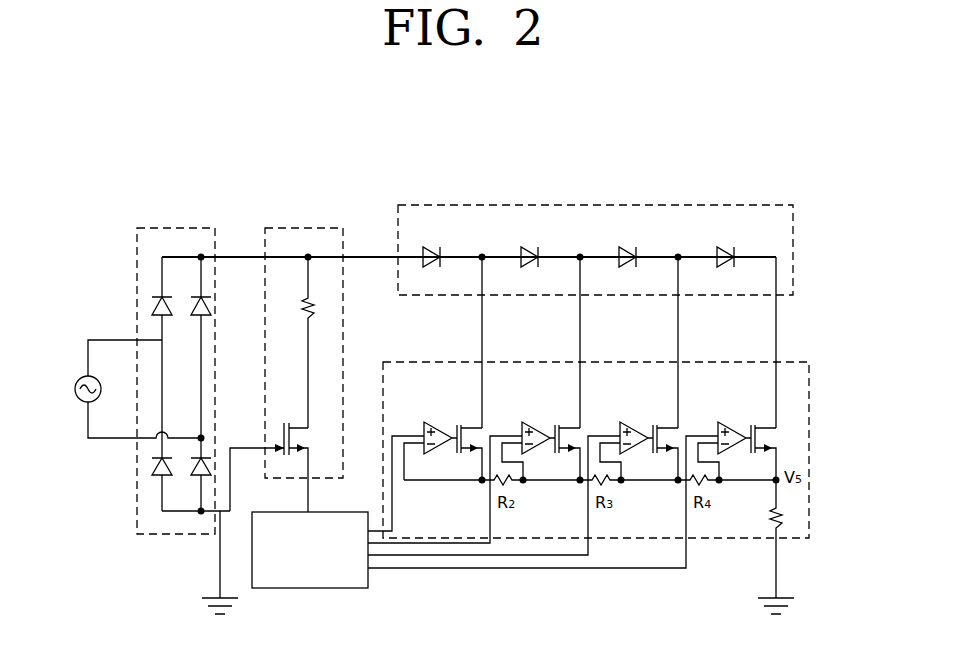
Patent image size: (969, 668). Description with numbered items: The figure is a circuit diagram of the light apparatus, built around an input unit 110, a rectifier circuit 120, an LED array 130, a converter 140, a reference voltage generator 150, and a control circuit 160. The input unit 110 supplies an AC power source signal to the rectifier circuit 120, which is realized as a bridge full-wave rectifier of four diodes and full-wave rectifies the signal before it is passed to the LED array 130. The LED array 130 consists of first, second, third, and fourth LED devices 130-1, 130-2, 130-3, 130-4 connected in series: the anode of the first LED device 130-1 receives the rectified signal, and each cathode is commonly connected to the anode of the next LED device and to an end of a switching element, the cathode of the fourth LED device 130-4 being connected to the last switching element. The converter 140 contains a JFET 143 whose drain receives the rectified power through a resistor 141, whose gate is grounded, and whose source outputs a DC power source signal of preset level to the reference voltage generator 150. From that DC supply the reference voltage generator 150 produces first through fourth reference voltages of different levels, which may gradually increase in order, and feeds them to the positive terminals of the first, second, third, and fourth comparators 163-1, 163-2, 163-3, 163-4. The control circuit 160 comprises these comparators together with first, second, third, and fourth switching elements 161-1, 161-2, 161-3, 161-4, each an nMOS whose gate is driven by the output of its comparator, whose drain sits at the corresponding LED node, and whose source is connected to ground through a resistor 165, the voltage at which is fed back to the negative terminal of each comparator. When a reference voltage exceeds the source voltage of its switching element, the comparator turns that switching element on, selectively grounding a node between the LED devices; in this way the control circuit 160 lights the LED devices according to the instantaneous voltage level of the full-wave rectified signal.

The input unit 110 is at (78, 379).
The rectifier circuit 120 is at (180, 228).
The LED array 130 is at (703, 205).
The first LED device 130-1 is at (441, 248).
The second LED device 130-2 is at (539, 248).
The third LED device 130-3 is at (637, 248).
The fourth LED device 130-4 is at (735, 248).
The converter 140 is at (297, 228).
The resistor R1 141 is at (312, 312).
The JFET 143 is at (308, 424).
The reference voltage generator 150 is at (308, 590).
The control circuit 160 is at (809, 414).
The first switching element 161-1 is at (461, 455).
The second switching element 161-2 is at (559, 455).
The third switching element 161-3 is at (657, 455).
The fourth switching element 161-4 is at (755, 455).
The first comparator 163-1 is at (425, 420).
The second comparator 163-2 is at (523, 420).
The third comparator 163-3 is at (621, 420).
The fourth comparator 163-4 is at (719, 420).
The resistor R5 165 is at (779, 522).